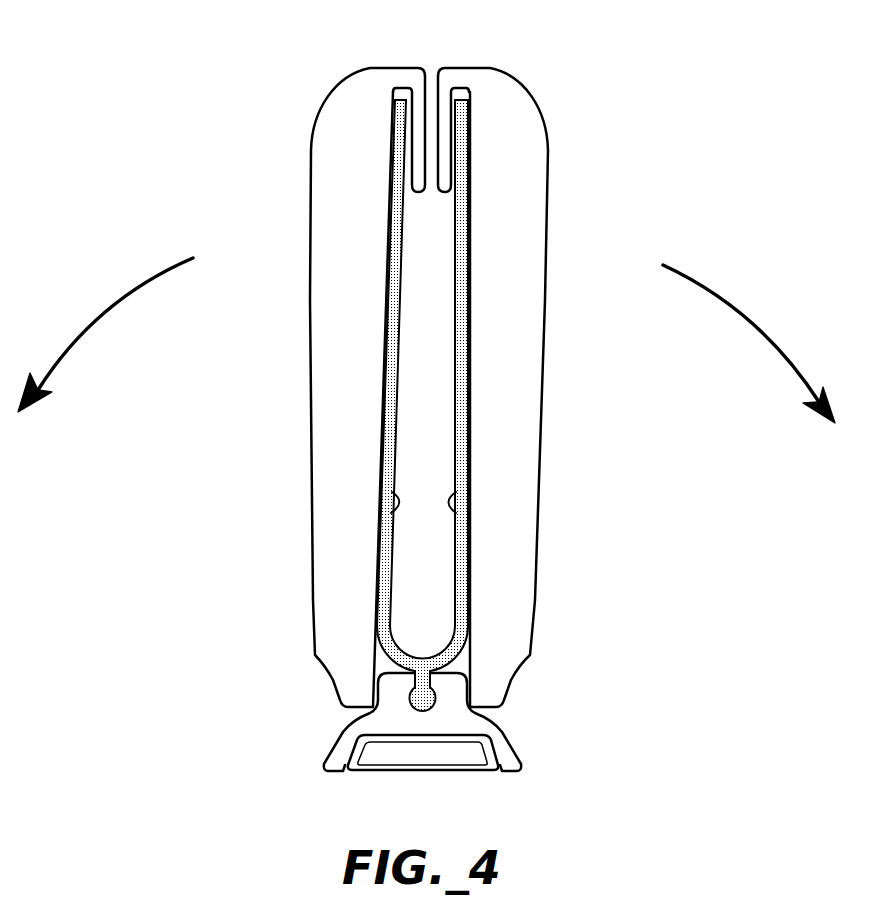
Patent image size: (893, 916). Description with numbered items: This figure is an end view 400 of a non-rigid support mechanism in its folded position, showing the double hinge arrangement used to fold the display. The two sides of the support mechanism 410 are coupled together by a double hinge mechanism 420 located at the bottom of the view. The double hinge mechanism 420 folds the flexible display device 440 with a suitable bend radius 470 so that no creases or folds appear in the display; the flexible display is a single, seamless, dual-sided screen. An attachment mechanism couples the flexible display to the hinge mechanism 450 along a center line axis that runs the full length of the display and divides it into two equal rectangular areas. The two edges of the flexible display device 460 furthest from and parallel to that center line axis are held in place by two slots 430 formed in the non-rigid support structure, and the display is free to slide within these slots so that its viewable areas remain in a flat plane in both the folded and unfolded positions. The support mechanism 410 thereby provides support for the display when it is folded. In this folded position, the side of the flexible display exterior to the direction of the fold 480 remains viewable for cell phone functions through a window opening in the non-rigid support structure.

The end view 400 is at (93, 57).
The support mechanism 410 is at (389, 67).
The double hinge mechanism 420 is at (328, 768).
The slots 430 is at (417, 143).
The flexible display device 440 is at (393, 493).
The hinge mechanism 450 is at (421, 697).
The edges of the flexible display device 460 is at (394, 106).
The bend radius 470 is at (421, 660).
The side of the flexible display exterior to the direction of the fold 480 is at (386, 366).